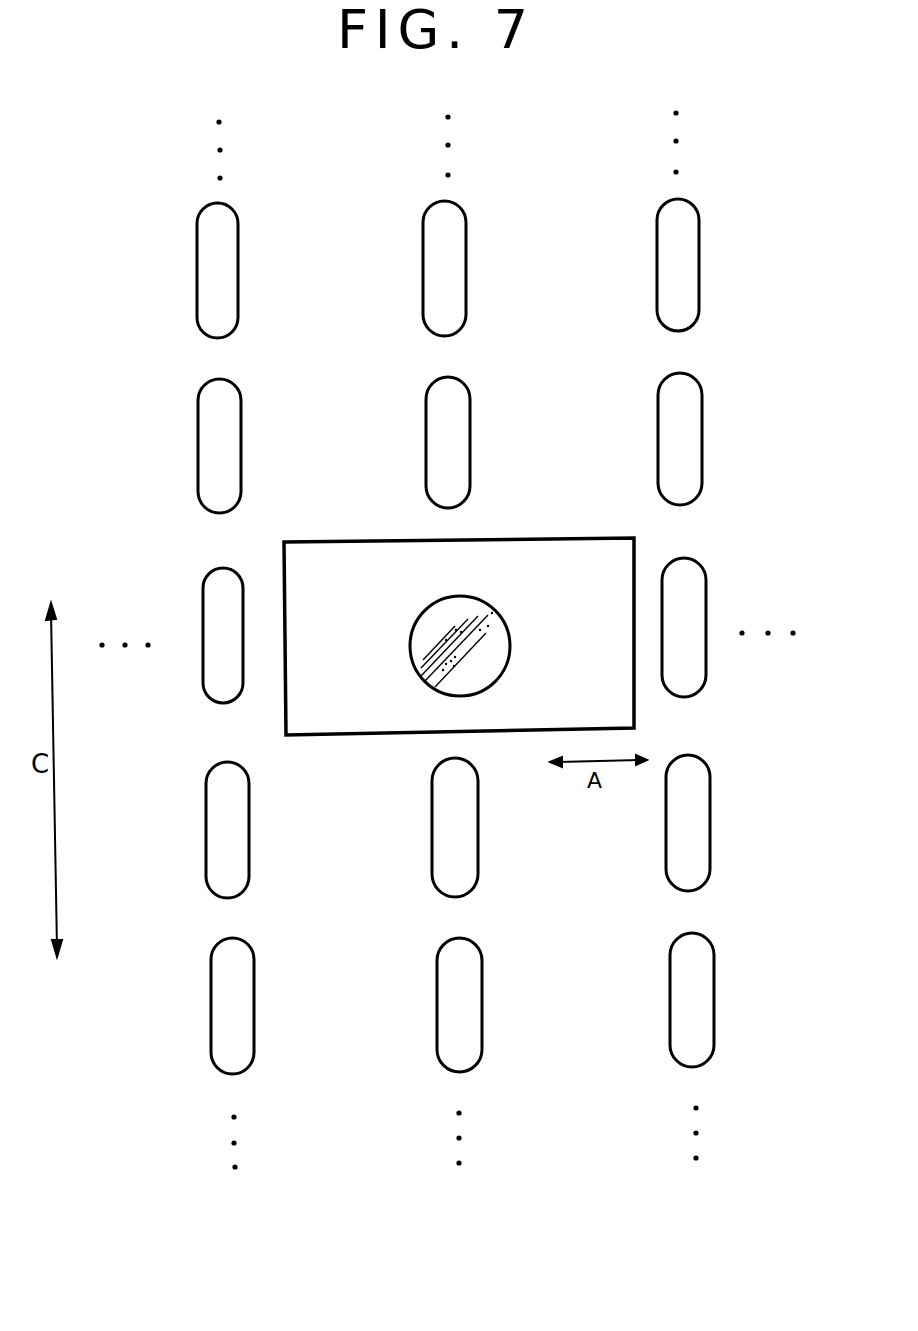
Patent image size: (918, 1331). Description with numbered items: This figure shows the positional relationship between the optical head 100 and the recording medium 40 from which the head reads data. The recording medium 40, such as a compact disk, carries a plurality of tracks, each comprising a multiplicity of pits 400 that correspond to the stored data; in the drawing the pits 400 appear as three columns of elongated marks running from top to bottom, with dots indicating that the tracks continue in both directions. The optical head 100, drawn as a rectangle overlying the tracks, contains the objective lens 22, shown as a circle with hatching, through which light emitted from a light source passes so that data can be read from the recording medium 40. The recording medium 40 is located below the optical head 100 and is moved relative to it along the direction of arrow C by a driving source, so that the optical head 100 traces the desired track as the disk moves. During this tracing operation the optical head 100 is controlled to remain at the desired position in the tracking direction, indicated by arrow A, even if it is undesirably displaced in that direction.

The recording medium 40 is at (287, 1188).
The pits 400 is at (713, 978).
The optical head 100 is at (537, 537).
The objective lens 22 is at (508, 663).